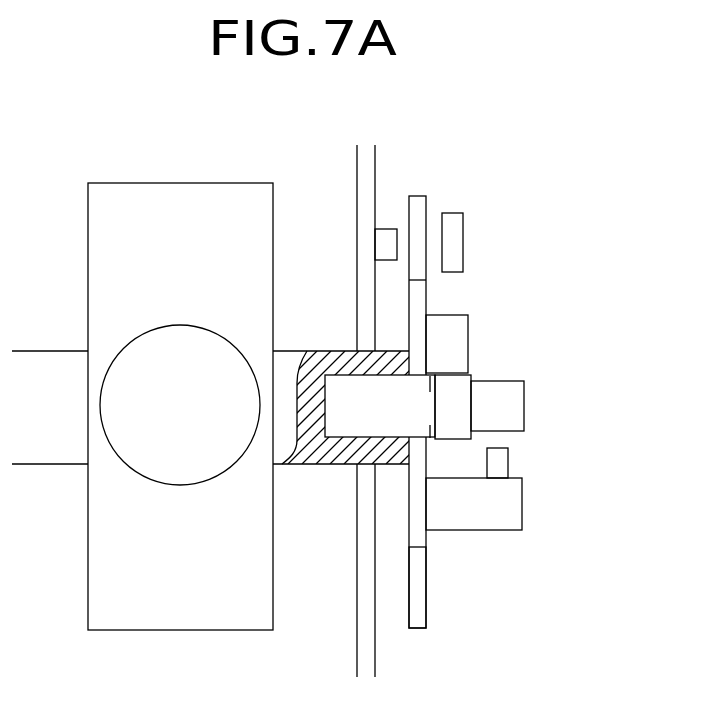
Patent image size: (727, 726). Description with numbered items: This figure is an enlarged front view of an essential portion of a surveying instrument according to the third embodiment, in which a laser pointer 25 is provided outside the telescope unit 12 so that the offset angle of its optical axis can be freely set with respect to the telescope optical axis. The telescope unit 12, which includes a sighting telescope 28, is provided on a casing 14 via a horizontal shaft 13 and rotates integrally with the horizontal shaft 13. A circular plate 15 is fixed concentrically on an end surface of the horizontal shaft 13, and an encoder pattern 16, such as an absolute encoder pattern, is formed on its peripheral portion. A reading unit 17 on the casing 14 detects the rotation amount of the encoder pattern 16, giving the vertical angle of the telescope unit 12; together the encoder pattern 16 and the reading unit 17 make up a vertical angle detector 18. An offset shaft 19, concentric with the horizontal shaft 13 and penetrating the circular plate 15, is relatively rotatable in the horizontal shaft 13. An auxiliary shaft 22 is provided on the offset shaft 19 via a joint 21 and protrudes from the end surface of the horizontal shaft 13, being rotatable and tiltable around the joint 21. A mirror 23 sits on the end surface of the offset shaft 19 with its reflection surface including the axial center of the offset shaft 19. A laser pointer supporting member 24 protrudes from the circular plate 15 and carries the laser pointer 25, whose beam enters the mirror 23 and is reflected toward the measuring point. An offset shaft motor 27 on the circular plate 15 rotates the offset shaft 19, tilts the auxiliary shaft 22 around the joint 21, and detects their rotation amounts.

The telescope unit 12 is at (273, 225).
The horizontal shaft 13 is at (316, 466).
The casing 14 is at (375, 160).
The circular plate 15 is at (406, 524).
The encoder pattern 16 is at (426, 577).
The reading unit 17 is at (463, 222).
The vertical angle detector 18 is at (447, 188).
The offset shaft 19 is at (345, 355).
The joint 21 is at (430, 427).
The auxiliary shaft 22 is at (471, 375).
The mirror 23 is at (524, 410).
The laser pointer supporting member 24 is at (522, 507).
The laser pointer 25 is at (508, 460).
The offset shaft motor 27 is at (468, 323).
The sighting telescope 28 is at (177, 325).